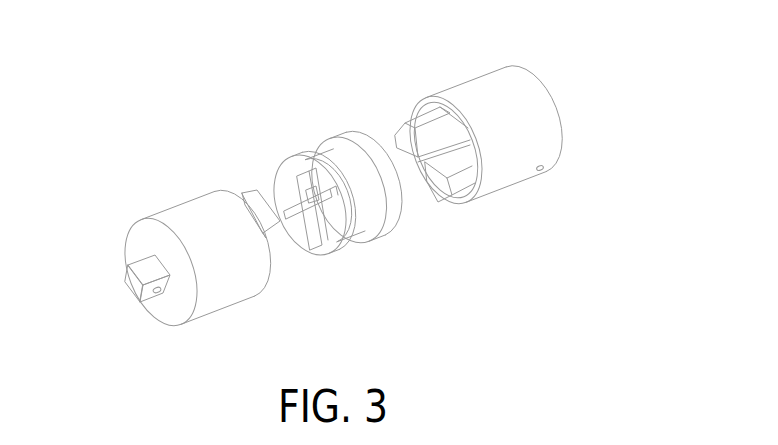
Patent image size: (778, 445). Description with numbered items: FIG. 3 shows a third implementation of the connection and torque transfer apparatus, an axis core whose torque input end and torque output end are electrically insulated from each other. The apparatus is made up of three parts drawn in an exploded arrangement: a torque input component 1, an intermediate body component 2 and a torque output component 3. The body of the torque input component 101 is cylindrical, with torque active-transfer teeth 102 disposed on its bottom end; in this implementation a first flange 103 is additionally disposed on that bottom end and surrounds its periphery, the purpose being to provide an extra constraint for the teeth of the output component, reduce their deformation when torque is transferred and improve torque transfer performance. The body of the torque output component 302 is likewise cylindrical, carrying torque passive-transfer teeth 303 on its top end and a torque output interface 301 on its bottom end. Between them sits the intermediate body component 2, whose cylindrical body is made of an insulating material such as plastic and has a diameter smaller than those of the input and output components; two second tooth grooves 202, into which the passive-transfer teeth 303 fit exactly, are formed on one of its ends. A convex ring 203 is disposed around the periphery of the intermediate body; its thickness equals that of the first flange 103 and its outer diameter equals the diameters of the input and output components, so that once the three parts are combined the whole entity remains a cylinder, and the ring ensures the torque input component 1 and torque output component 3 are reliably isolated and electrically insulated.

The torque input component 1 is at (484, 124).
The body of the torque input component 101 is at (531, 103).
The torque active-transfer teeth 102 is at (402, 133).
The first flange 103 is at (481, 186).
The intermediate body component 2 is at (352, 190).
The second tooth grooves 202 is at (300, 227).
The convex ring 203 is at (378, 238).
The torque output component 3 is at (173, 239).
The torque output interface 301 is at (126, 280).
The body of the torque output component 302 is at (211, 303).
The torque passive-transfer teeth 303 is at (253, 198).